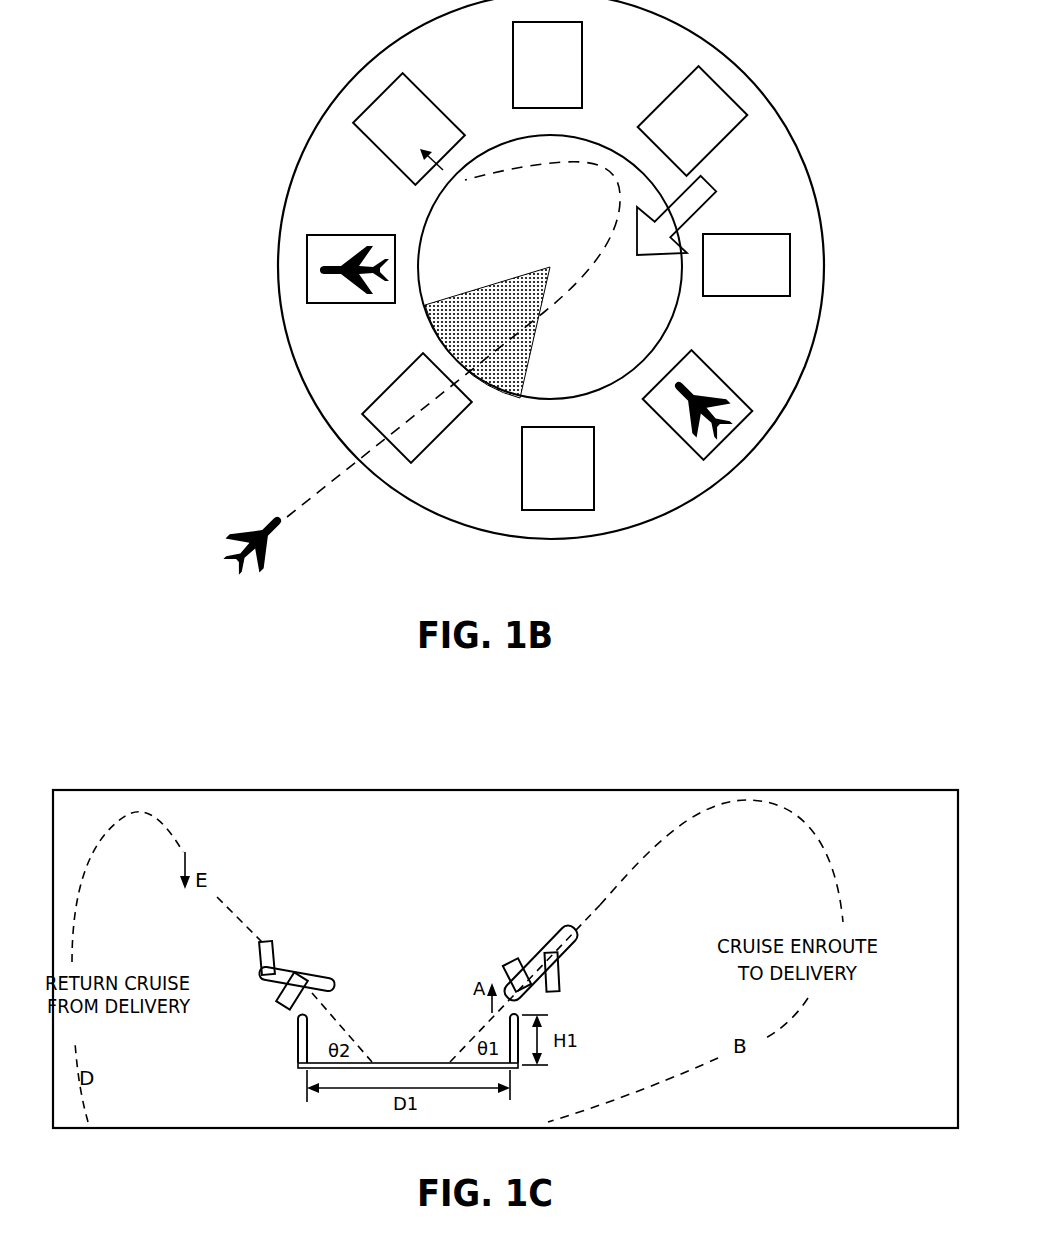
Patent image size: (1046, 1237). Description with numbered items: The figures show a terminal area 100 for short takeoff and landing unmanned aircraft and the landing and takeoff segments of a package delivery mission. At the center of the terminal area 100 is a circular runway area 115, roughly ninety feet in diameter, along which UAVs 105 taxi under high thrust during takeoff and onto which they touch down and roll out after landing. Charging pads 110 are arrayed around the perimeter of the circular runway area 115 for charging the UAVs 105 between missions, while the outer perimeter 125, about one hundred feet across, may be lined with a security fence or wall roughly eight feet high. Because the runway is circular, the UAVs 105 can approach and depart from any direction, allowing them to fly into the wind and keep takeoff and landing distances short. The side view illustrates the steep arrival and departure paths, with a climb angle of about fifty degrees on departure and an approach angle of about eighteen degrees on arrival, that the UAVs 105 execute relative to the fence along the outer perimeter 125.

In FIG. 1B, the terminal area 100 is at (808, 472).
In FIG. 1B, the UAV 105 is at (322, 264).
In FIG. 1C, the UAV 105 is at (296, 940).
In FIG. 1B, the charging pad 110 is at (360, 121).
In FIG. 1B, the circular runway area 115 is at (512, 252).
In FIG. 1C, the circular runway area 115 is at (421, 1003).
In FIG. 1B, the outer perimeter 125 is at (793, 150).
In FIG. 1C, the outer perimeter 125 is at (300, 1043).